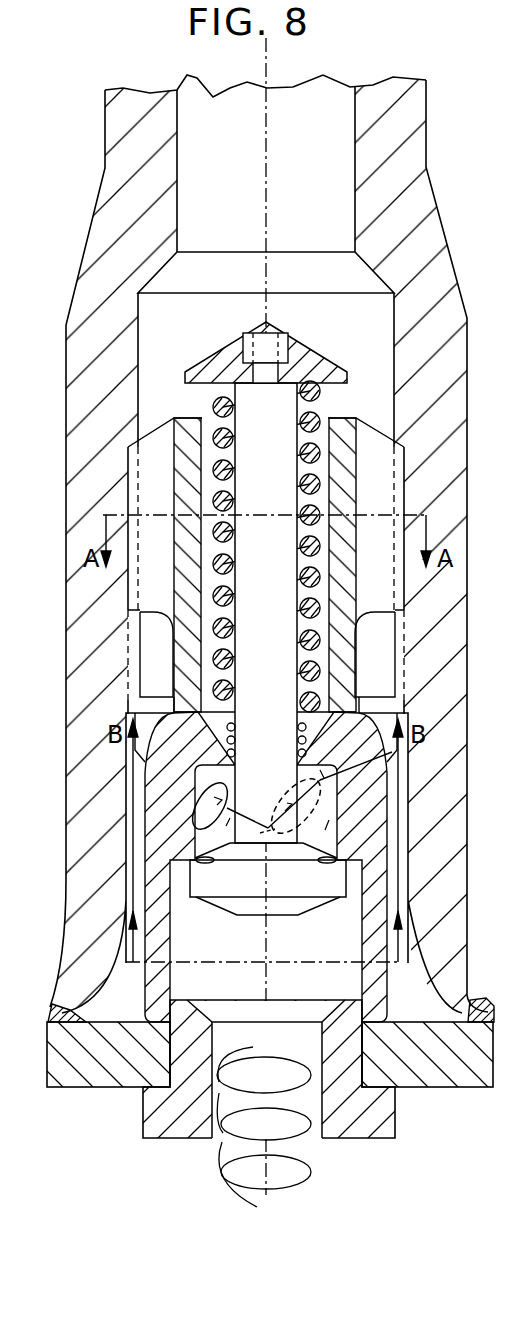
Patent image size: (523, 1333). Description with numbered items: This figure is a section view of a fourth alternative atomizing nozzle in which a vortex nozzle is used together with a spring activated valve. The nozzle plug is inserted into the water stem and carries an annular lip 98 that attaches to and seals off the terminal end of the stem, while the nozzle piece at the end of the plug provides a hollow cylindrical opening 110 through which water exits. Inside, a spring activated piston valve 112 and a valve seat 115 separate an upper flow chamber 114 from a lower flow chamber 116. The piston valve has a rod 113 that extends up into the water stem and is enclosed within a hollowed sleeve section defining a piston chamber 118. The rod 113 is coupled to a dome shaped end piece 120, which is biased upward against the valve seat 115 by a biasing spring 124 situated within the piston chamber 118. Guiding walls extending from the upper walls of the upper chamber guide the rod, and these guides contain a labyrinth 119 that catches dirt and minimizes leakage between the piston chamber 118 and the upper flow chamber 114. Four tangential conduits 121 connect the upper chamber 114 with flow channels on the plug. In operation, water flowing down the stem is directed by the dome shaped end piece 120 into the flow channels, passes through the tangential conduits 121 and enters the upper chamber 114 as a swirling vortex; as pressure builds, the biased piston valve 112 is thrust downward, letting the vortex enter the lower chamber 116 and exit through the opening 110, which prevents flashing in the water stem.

The annular lip 98 is at (48, 1060).
The hollow cylindrical opening 110 is at (253, 1113).
The piston valve 112 is at (234, 905).
The rod 113 is at (288, 595).
The upper flow chamber 114 is at (260, 813).
The valve seat 115 is at (264, 875).
The lower flow chamber 116 is at (349, 947).
The piston chamber 118 is at (222, 560).
The labyrinth 119 is at (226, 733).
The dome shaped end piece 120 is at (308, 356).
The tangential conduits 121 is at (309, 792).
The biasing spring 124 is at (318, 412).